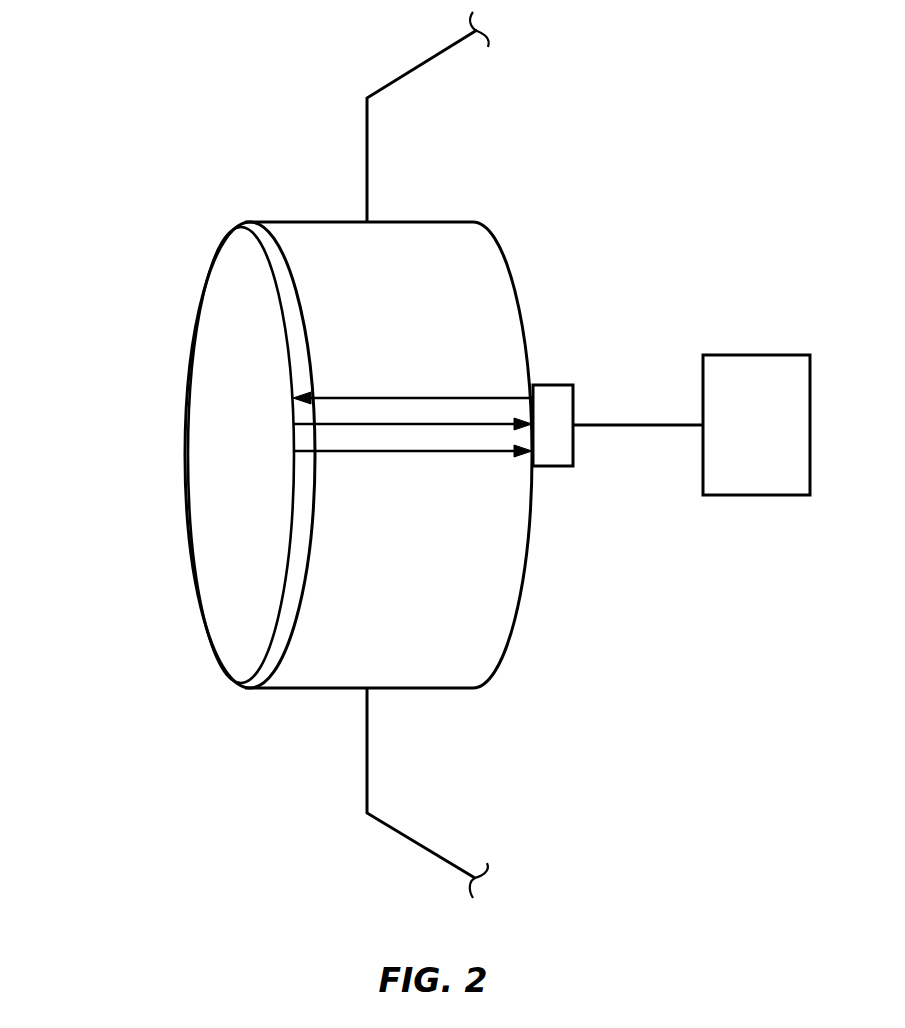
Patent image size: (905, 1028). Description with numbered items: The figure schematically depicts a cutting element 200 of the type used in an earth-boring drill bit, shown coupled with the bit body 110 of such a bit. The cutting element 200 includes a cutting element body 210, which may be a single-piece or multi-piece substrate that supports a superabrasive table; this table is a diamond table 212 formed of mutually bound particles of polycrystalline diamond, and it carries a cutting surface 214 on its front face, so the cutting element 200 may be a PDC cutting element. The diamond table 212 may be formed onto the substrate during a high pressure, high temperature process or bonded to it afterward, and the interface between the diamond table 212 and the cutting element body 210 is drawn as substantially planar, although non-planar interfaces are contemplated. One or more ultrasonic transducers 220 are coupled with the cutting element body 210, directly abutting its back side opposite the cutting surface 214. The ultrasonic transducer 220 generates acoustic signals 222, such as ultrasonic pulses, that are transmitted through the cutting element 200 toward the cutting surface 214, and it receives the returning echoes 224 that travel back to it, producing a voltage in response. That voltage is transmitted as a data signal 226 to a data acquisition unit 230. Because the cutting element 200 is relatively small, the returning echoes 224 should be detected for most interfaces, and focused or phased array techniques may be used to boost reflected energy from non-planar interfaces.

The bit body 110 is at (407, 68).
The cutting element 200 is at (273, 170).
The cutting element body 210 is at (405, 690).
The diamond table 212 is at (247, 688).
The cutting surface 214 is at (224, 409).
The ultrasonic transducer 220 is at (556, 385).
The acoustic signals 222 is at (390, 395).
The returning echoes 224 is at (370, 452).
The data signal 226 is at (645, 427).
The data acquisition unit 230 is at (731, 437).